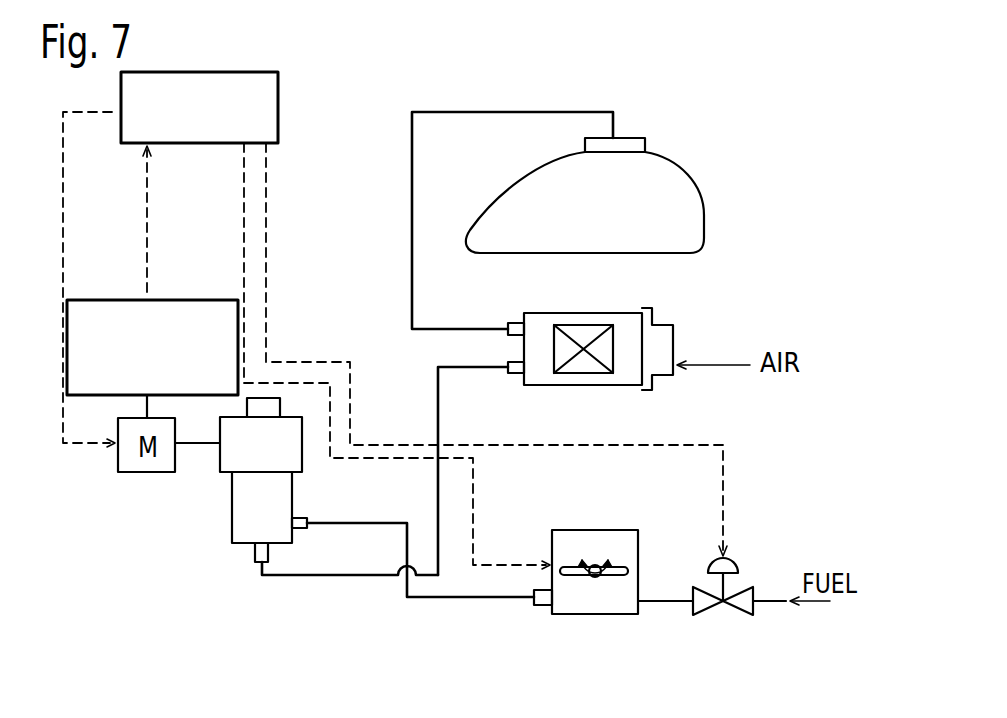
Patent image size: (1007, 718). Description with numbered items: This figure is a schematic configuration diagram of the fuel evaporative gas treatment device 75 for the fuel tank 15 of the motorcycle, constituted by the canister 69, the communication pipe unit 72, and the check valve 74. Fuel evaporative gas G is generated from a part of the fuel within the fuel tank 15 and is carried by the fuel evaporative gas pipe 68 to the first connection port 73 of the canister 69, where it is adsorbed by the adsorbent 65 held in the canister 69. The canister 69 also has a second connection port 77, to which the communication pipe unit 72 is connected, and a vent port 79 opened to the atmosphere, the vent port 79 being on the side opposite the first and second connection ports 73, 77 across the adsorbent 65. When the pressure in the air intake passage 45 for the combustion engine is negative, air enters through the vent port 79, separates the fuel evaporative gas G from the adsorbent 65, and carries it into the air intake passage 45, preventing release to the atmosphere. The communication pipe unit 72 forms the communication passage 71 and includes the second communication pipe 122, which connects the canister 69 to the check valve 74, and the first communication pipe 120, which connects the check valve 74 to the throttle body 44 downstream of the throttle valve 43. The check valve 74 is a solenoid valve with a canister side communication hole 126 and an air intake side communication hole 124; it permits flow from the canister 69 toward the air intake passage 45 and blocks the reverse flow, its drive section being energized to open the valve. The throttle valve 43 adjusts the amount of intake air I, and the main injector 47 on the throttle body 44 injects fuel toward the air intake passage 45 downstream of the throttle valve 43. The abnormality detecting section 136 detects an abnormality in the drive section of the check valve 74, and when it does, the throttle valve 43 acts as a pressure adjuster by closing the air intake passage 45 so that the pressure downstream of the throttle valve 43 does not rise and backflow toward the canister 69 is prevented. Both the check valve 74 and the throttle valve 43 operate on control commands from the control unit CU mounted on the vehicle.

The control unit CU is at (232, 72).
The abnormality detecting section 136 is at (107, 300).
The check valve 74 is at (238, 513).
The canister side communication hole 126 is at (254, 553).
The air intake side communication hole 124 is at (305, 518).
The communication passage 71 is at (398, 521).
The second communication pipe 122 is at (438, 392).
The first communication pipe 120 is at (420, 597).
The communication pipe unit 72 is at (430, 500).
The fuel tank 15 is at (690, 172).
The fuel evaporative gas pipe 68 is at (412, 191).
The first connection port 73 is at (513, 323).
The second connection port 77 is at (515, 375).
The canister 69 is at (618, 313).
The adsorbent 65 is at (600, 355).
The vent port 79 is at (667, 325).
The fuel evaporative gas treatment device 75 is at (782, 240).
The air intake passage 45 is at (591, 541).
The throttle body 44 is at (553, 548).
The throttle valve 43 is at (620, 566).
The main injector 47 is at (707, 610).
The fuel evaporative gas G is at (408, 340).
The intake air flow I is at (596, 528).